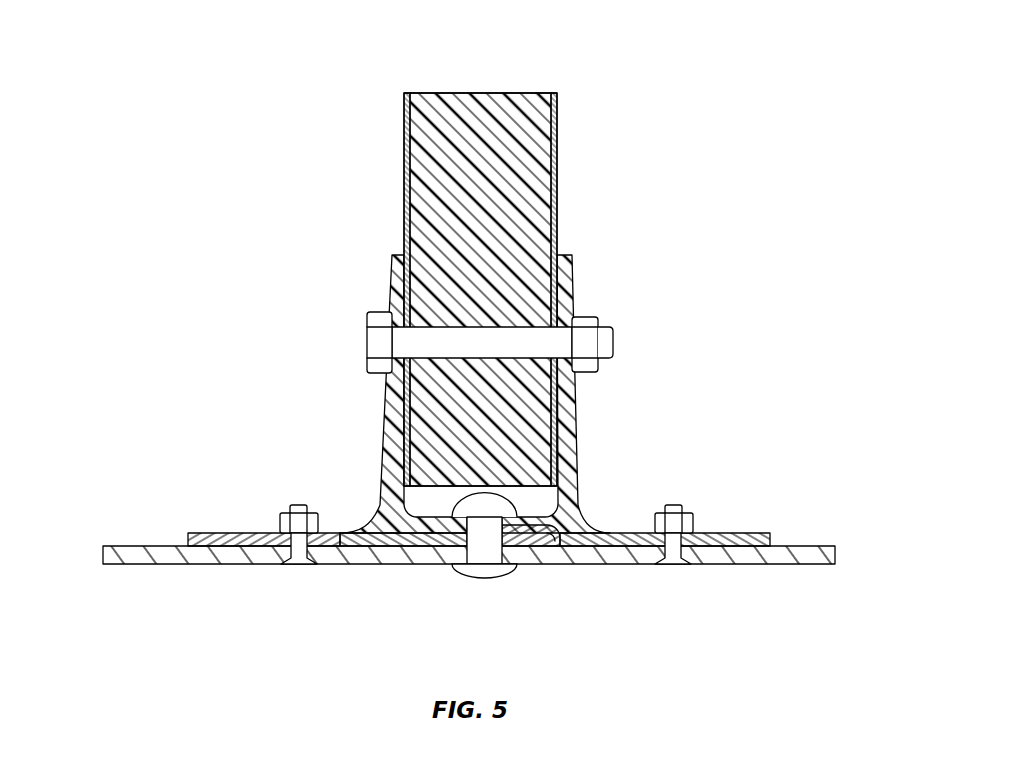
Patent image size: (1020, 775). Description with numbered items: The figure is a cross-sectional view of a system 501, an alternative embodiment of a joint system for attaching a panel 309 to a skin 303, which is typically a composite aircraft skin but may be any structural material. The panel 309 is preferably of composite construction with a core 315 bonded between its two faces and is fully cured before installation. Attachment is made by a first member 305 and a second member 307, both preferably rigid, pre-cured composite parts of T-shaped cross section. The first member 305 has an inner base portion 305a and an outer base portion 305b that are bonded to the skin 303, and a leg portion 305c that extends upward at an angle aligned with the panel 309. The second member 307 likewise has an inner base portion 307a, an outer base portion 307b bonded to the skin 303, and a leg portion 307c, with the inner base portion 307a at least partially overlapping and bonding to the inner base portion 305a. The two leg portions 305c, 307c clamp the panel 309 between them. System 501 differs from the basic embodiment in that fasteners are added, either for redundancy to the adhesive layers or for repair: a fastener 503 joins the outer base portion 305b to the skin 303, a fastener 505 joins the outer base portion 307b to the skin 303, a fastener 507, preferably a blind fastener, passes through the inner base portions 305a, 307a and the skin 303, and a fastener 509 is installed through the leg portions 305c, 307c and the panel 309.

The system 501 is at (248, 135).
The skin 303 is at (127, 565).
The first member 305 is at (372, 439).
The inner base portion 305a is at (531, 528).
The outer base portion 305b is at (250, 533).
The leg portion 305c is at (387, 427).
The second member 307 is at (584, 439).
The inner base portion 307a is at (433, 530).
The outer base portion 307b is at (713, 535).
The leg portion 307c is at (578, 425).
The panel 309 is at (479, 263).
The core 315 is at (425, 168).
The fastener 503 is at (284, 566).
The fastener 505 is at (675, 566).
The fastener 507 is at (485, 578).
The fastener 509 is at (368, 342).